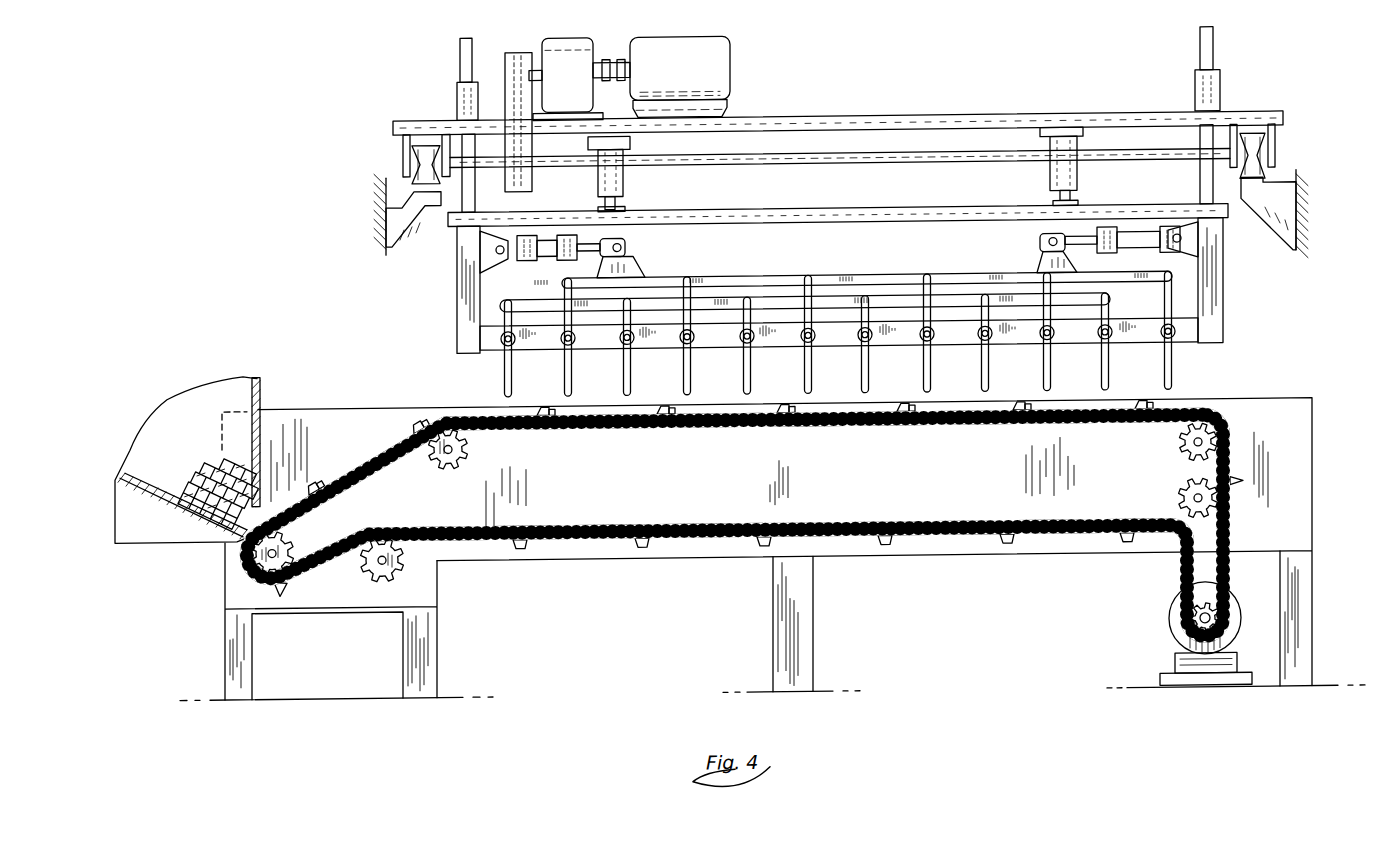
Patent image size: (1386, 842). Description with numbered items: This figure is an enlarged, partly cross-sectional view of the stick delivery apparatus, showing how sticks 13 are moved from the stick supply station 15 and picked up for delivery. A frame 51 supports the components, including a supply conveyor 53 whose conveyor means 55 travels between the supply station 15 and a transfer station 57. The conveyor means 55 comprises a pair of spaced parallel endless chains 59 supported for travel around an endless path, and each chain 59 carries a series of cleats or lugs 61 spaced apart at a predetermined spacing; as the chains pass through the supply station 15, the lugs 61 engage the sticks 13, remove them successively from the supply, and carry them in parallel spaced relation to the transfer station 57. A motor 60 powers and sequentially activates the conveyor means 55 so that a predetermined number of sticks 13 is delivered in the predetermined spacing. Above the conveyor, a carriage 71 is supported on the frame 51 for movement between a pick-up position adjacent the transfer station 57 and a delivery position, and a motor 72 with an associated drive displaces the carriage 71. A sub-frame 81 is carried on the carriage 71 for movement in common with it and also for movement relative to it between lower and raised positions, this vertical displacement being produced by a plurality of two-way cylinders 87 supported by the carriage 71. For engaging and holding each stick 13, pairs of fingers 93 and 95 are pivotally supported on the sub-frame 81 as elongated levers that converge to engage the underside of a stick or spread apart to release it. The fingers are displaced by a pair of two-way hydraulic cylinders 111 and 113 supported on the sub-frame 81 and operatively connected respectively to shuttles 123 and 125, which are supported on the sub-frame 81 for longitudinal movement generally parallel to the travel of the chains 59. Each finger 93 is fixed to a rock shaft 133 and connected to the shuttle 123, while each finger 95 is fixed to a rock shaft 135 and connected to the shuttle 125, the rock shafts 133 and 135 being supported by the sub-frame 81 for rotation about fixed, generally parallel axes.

The sticks 13 is at (199, 460).
The stick supply station 15 is at (218, 390).
The frame 51 is at (393, 207).
The supply conveyor 53 is at (683, 485).
The conveyor means 55 is at (822, 430).
The transfer station 57 is at (961, 383).
The chains 59 is at (627, 423).
The motor 60 is at (1171, 619).
The cleats or lugs 61 is at (407, 431).
The carriage 71 is at (455, 90).
The motor 72 is at (712, 51).
The sub-frame 81 is at (458, 34).
The two way cylinders 87 is at (613, 188).
The fingers 93 is at (504, 368).
The fingers 95 is at (623, 369).
The two-way hydraulic cylinder 111 is at (548, 236).
The two-way hydraulic cylinder 113 is at (1127, 238).
The shuttle 123 is at (773, 275).
The shuttle 125 is at (953, 297).
The rock shafts 133 is at (500, 334).
The rock shafts 135 is at (1176, 336).